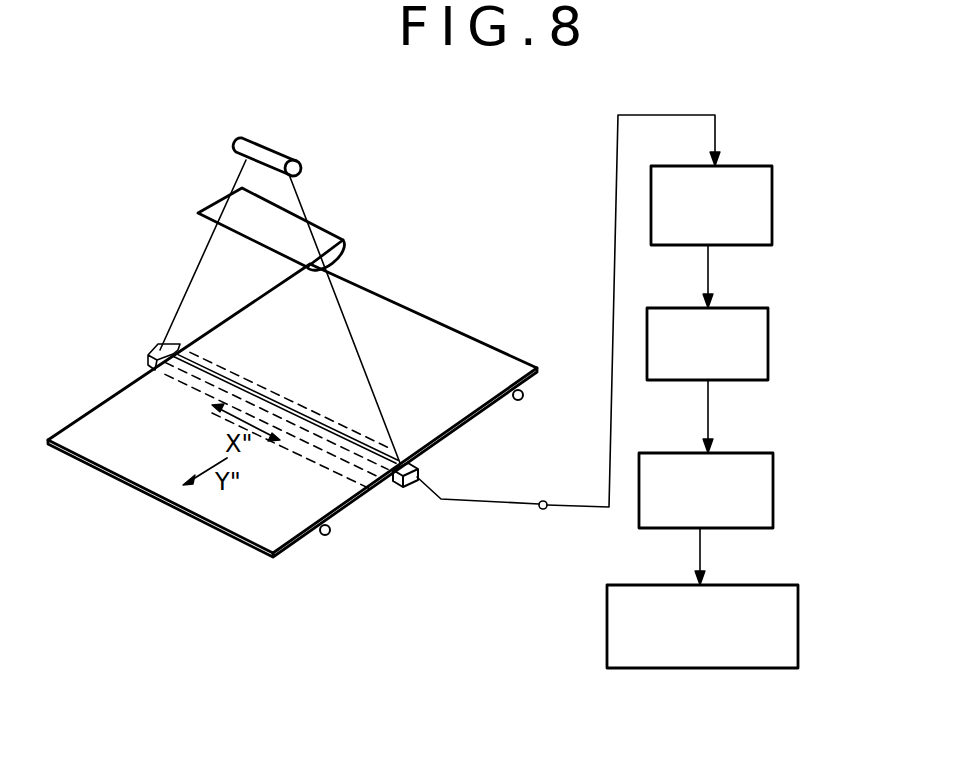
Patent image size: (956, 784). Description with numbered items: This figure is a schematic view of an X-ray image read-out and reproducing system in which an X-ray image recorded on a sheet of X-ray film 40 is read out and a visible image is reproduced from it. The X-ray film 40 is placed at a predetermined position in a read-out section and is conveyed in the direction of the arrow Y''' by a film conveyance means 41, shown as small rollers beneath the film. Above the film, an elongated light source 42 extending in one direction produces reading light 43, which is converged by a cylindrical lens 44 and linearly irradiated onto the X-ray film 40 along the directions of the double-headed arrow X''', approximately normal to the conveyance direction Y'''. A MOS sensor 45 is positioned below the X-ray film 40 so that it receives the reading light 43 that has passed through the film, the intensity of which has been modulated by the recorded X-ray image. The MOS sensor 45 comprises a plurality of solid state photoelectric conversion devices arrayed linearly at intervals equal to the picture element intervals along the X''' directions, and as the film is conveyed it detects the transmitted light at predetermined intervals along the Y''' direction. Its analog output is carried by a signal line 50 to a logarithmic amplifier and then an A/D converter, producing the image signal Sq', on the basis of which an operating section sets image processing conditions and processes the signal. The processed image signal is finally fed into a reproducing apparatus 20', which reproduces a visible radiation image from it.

The reproducing apparatus 20' is at (702, 622).
The X-ray film 40 is at (508, 351).
The film conveyance means 41 is at (526, 396).
The elongated light source 42 is at (294, 160).
The reading light 43 is at (298, 200).
The cylindrical lens 44 is at (343, 236).
The MOS sensor 45 is at (419, 472).
The signal line 50 is at (543, 510).
The image signal Sq' is at (736, 416).